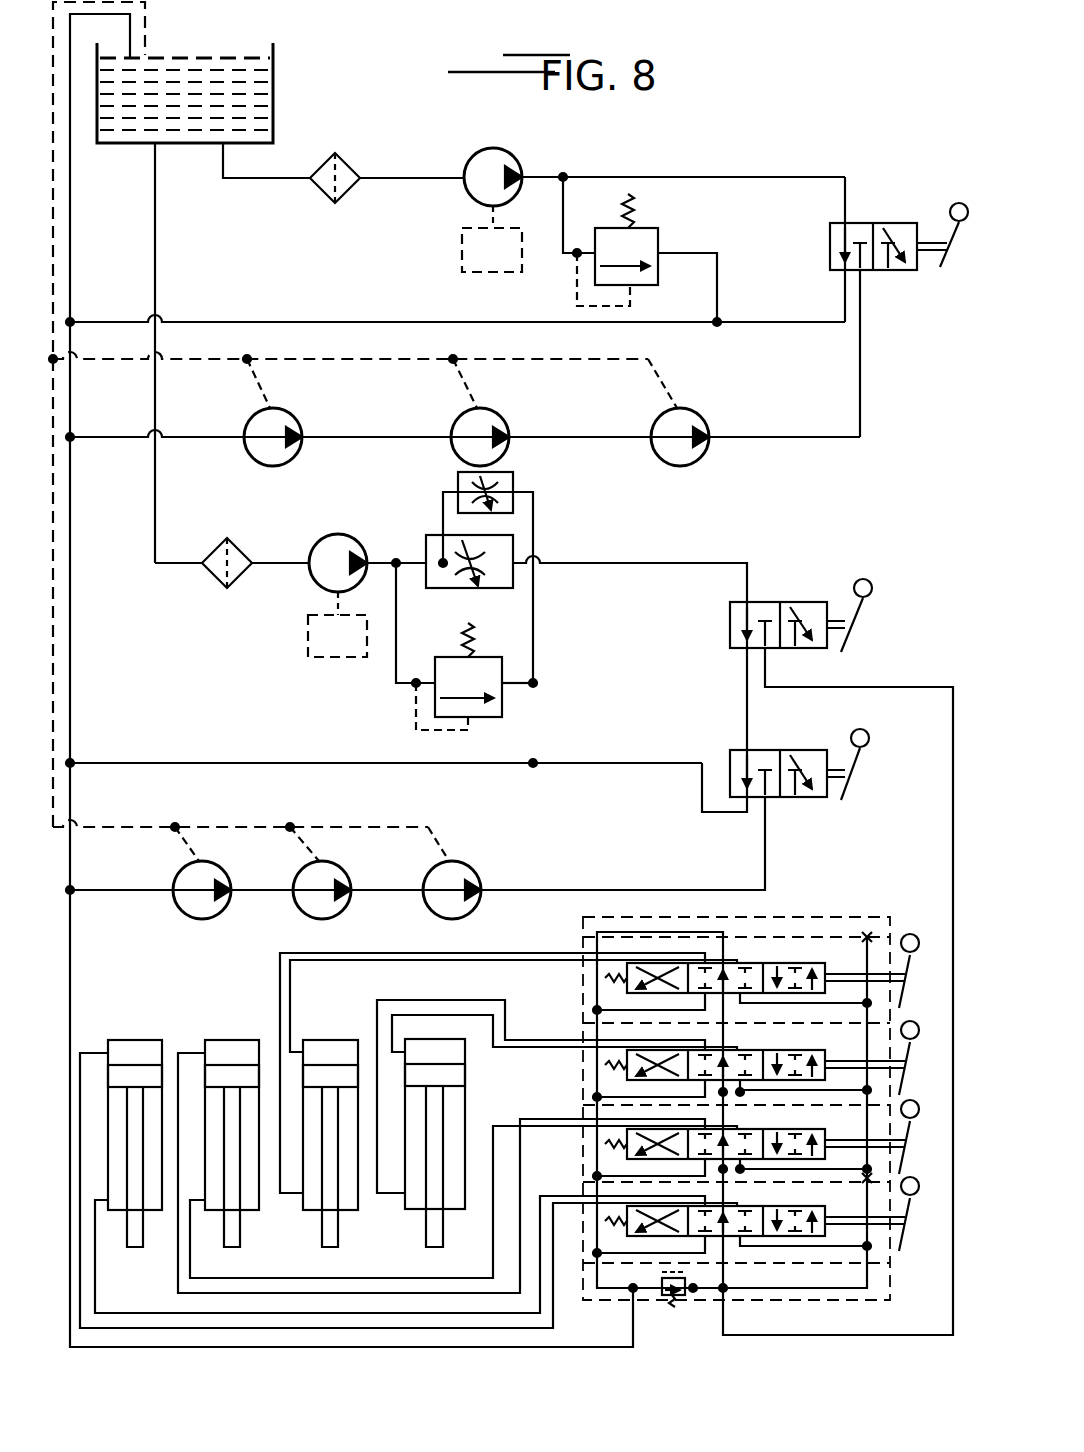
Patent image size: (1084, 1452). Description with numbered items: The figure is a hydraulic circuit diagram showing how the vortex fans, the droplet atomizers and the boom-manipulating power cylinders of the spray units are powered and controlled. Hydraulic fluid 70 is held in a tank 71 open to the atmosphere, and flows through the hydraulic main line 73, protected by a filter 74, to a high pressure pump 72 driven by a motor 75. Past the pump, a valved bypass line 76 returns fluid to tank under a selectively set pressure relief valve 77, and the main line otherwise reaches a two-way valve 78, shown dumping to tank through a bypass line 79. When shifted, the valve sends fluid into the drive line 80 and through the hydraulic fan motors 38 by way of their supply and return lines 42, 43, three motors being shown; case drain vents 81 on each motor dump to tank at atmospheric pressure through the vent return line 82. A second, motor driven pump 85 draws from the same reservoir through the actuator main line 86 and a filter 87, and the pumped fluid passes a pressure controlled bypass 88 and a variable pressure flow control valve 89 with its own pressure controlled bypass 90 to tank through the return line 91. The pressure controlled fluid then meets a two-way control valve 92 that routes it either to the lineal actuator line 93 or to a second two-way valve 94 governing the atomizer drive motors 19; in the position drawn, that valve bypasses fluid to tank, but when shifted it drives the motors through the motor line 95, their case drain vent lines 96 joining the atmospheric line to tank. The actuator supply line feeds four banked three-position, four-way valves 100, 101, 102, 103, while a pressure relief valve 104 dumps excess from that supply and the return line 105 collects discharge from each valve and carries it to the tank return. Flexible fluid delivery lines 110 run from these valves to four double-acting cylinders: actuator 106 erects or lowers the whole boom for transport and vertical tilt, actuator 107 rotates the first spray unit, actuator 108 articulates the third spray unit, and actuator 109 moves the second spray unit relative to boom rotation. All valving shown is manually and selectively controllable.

The motor 19 is at (186, 912).
The hydraulic fan motor 38 is at (292, 418).
The hydraulic supply line 42 is at (529, 451).
The hydraulic return line 43 is at (463, 448).
The hydraulic fluid 70 is at (200, 62).
The tank 71 is at (275, 103).
The high pressure pump 72 is at (493, 148).
The hydraulic main line 73 is at (392, 172).
The filter 74 is at (322, 190).
The motor 75 is at (462, 250).
The valved bypass line 76 is at (567, 190).
The pressure relief valve 77 is at (680, 220).
The two-way valve 78 is at (893, 218).
The bypass line 79 is at (742, 316).
The drive line 80 is at (862, 370).
The case drain vent 81 is at (275, 395).
The vent return line 82 is at (45, 318).
The motor driven pump 85 is at (345, 545).
The actuator main line 86 is at (152, 508).
The filter 87 is at (217, 580).
The pressure controlled bypass 88 is at (343, 676).
The variable pressure flow control valve 89 is at (513, 545).
The pressure controlled bypass 90 is at (538, 702).
The return line 91 is at (70, 675).
The two-way control valve 92 is at (800, 592).
The lineal actuator line 93 is at (953, 798).
The two-way valve 94 is at (790, 745).
The motor line 95 is at (767, 868).
The case drain vent line 96 is at (196, 862).
The three-position four-way valve 100 is at (583, 1280).
The three-position four-way valve 101 is at (583, 1145).
The three-position four-way valve 102 is at (583, 1060).
The three-position four-way valve 103 is at (583, 937).
The pressure relief valve 104 is at (682, 1302).
The return line 105 is at (560, 1348).
The actuator 106 is at (150, 1040).
The actuator 107 is at (252, 1040).
The actuator 108 is at (468, 1102).
The actuator 109 is at (350, 1040).
The fluid delivery line 110 is at (512, 1020).